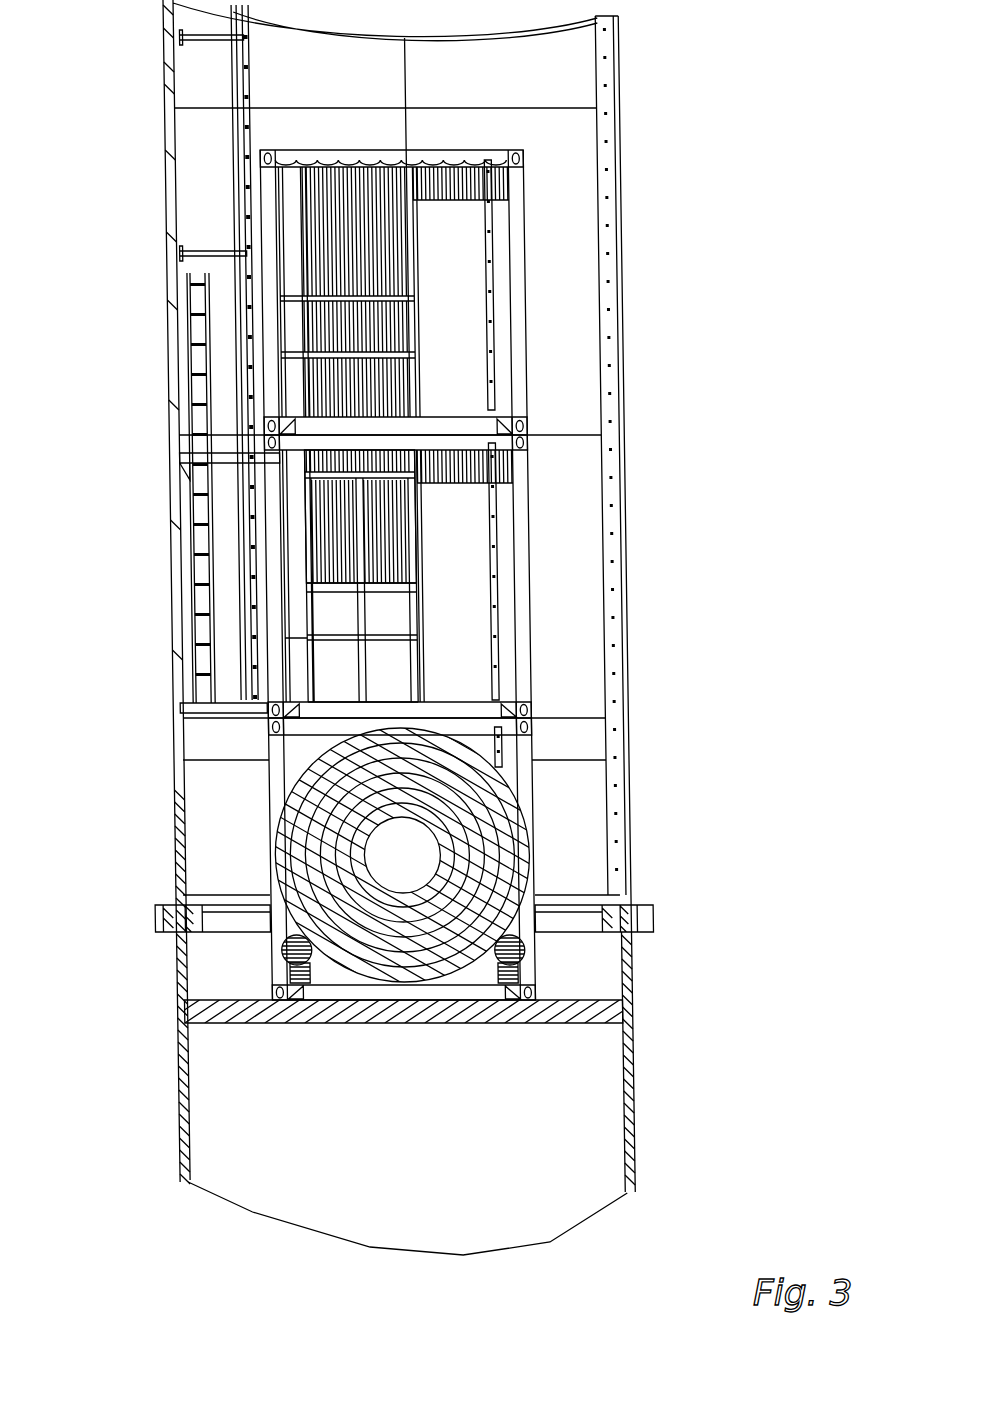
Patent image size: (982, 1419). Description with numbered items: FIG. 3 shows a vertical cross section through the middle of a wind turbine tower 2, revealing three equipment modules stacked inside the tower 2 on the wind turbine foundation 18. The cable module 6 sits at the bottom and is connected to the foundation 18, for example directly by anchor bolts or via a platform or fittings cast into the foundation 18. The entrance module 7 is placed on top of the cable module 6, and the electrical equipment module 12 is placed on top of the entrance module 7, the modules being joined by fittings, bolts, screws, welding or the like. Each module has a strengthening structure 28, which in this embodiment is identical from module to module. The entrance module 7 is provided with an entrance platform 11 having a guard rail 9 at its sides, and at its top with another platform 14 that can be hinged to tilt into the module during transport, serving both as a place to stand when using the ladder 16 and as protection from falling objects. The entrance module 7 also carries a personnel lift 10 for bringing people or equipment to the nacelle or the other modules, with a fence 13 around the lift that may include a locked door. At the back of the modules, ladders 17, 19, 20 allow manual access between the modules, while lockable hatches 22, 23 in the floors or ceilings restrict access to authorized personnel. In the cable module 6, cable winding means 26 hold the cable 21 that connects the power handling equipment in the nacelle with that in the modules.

The wind turbine tower 2 is at (168, 176).
The ladder 16 is at (244, 92).
The strengthening structure 28 is at (258, 237).
The electrical equipment module 12 is at (530, 352).
The ladder 17 is at (490, 258).
The hatch 22 is at (470, 412).
The entrance module 7 is at (533, 488).
The personnel lift 10 is at (357, 527).
The fence 13 is at (297, 635).
The ladder 19 is at (497, 567).
The hatch 23 is at (477, 698).
The cable module 6 is at (537, 802).
The ladder 20 is at (500, 753).
The cable 21 is at (513, 862).
The cable winding means 26 is at (283, 952).
The wind turbine foundation 18 is at (183, 1012).
The platform 14 is at (182, 470).
The guard rail 9 is at (235, 640).
The entrance platform 11 is at (182, 704).